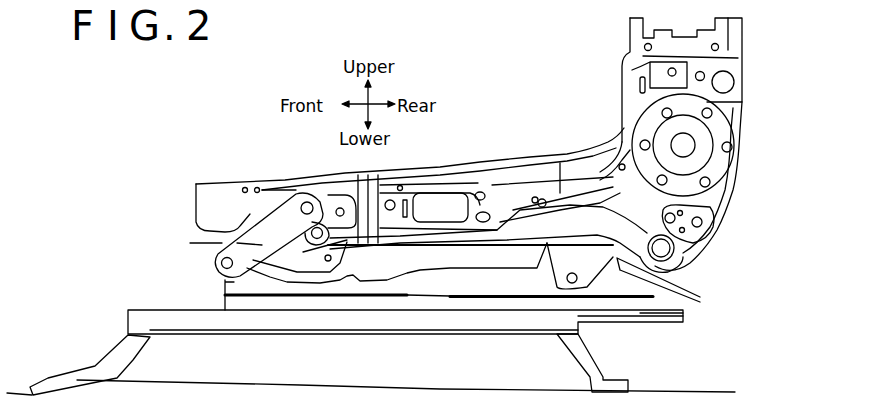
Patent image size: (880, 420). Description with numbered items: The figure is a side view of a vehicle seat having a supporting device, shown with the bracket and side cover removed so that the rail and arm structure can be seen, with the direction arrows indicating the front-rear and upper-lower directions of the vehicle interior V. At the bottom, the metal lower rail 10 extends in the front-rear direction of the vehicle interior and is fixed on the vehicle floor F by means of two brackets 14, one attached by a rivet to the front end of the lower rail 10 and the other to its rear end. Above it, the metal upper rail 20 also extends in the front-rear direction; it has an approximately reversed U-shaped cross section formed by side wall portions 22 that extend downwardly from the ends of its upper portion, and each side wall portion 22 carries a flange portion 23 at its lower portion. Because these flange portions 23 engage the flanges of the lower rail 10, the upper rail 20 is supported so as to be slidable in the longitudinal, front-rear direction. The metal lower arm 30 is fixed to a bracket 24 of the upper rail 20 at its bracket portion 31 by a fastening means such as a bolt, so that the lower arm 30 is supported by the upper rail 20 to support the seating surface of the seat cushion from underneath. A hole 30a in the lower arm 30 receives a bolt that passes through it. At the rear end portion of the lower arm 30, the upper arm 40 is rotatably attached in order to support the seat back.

The lower rail 10 is at (407, 335).
The bracket 14 is at (137, 357).
The upper rail 20 is at (624, 323).
The side wall portion 22 is at (653, 292).
The flange portion 23 is at (663, 323).
The bracket 24 is at (224, 285).
The lower arm 30 is at (558, 170).
The hole 30a is at (480, 192).
The bracket portion 31 is at (216, 245).
The upper arm 40 is at (625, 42).
The vehicle floor F is at (718, 388).
The vehicle interior V is at (255, 137).